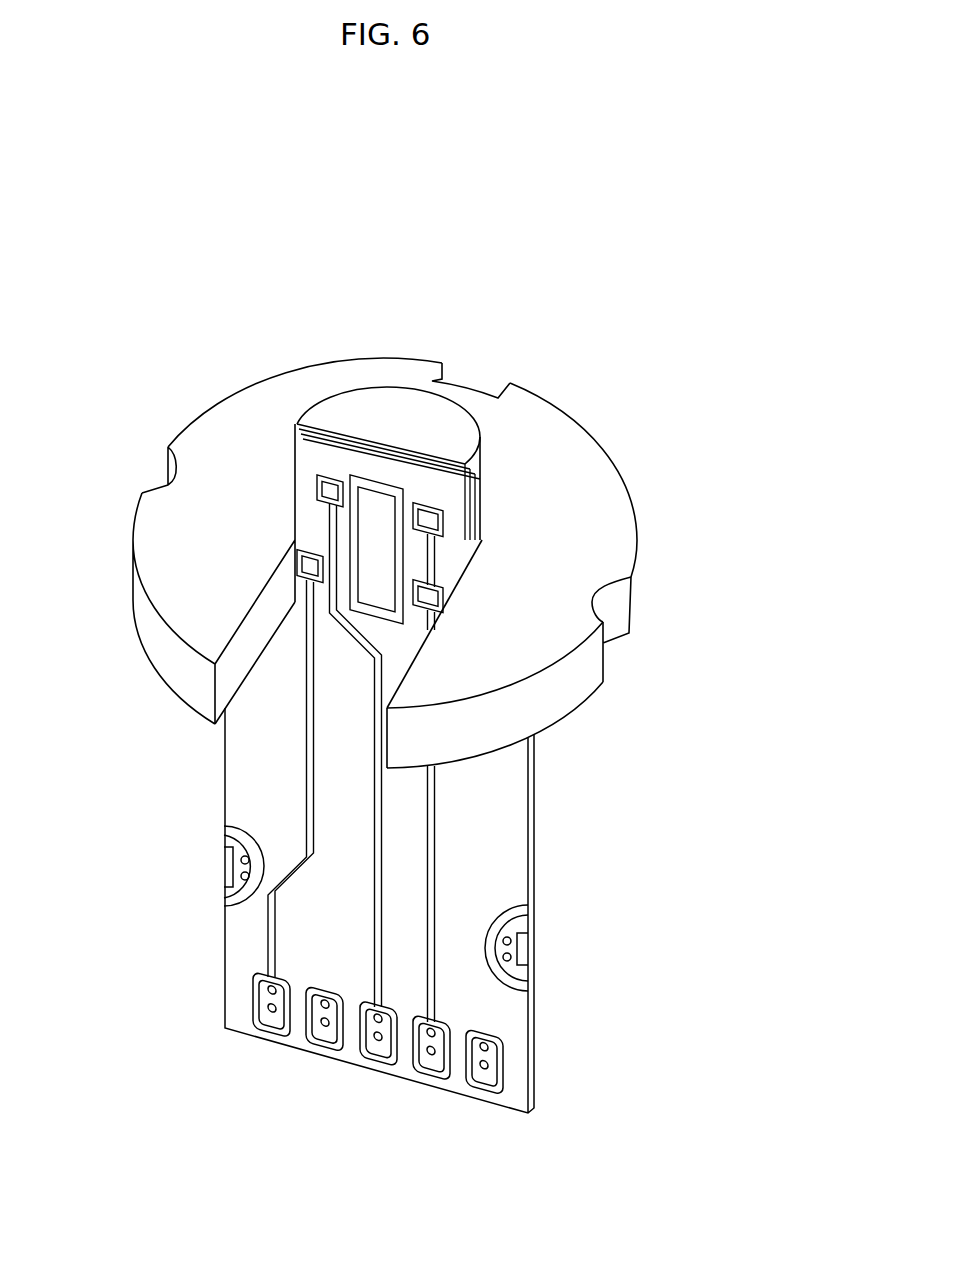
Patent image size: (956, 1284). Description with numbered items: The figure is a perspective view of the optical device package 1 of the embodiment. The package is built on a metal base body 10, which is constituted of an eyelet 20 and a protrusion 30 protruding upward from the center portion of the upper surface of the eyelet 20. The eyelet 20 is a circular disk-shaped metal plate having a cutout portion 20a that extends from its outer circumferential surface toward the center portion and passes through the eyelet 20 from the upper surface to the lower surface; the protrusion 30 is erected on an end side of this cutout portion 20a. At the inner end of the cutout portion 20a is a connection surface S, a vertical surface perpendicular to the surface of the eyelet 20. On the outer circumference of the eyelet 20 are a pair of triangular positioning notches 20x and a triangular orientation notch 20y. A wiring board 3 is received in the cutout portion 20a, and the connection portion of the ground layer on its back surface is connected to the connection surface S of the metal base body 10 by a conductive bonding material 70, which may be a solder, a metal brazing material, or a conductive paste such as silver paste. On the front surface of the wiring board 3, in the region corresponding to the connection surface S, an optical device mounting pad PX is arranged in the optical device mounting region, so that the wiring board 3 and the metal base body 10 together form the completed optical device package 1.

The optical device package 1 is at (386, 210).
The wiring board 3 is at (567, 849).
The metal base body 10 is at (725, 408).
The eyelet 20 is at (598, 522).
The cutout portion 20a is at (260, 640).
The positioning notches 20x is at (160, 470).
The orientation notch 20y is at (472, 383).
The protrusion 30 is at (457, 450).
The conductive bonding material 70 is at (470, 538).
The optical device mounting pad PX is at (350, 547).
The connection surface S is at (386, 447).